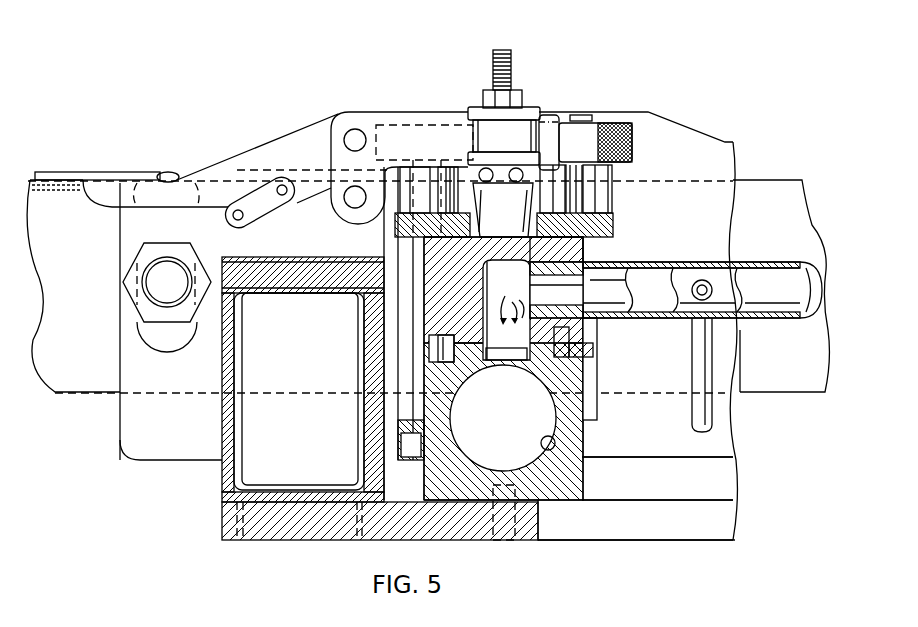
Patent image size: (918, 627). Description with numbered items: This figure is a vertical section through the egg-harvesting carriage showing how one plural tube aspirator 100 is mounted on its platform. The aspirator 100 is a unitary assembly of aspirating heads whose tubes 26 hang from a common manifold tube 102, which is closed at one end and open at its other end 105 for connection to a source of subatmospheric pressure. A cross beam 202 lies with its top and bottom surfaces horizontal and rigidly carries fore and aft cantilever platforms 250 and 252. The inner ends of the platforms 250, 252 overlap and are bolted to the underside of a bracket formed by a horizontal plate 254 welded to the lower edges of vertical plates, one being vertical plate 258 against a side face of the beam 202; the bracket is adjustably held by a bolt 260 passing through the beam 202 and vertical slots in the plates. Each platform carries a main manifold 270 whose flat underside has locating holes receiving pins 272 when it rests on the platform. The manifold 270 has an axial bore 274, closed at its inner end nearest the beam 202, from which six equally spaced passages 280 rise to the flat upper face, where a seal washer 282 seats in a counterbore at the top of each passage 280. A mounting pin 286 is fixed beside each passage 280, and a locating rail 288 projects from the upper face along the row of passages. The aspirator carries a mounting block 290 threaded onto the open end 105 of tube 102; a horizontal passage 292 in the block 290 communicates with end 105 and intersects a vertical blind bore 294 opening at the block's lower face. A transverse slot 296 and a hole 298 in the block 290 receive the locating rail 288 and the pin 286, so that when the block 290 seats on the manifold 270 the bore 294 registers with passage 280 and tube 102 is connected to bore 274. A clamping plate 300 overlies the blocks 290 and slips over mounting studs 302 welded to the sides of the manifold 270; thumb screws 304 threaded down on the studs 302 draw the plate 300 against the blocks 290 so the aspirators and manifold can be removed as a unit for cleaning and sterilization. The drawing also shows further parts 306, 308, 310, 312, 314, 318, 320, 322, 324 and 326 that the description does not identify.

The tube 26 is at (691, 361).
The plural tube aspirator 100 is at (793, 230).
The common manifold tube 102 is at (774, 361).
The open end of tube 105 is at (595, 265).
The cross beam 202 is at (756, 180).
The fore cantilever platform 250 is at (735, 525).
The aft cantilever platform 252 is at (260, 536).
The horizontal plate 254 is at (738, 482).
The vertical plate 258 is at (740, 432).
The bolt 260 is at (131, 296).
The main manifold 270 is at (583, 478).
The pins 272 is at (530, 543).
The axial bore 274 is at (553, 440).
The passages 280 is at (500, 366).
The seal washer 282 is at (510, 310).
The mounting pins 286 is at (439, 352).
The locating rail 288 is at (569, 357).
The mounting block 290 is at (608, 257).
The horizontal passage 292 is at (570, 258).
The vertical blind bore 294 is at (441, 273).
The transverse slot 296 is at (600, 343).
The hole 298 is at (439, 338).
The clamping plate 300 is at (613, 235).
The mounting studs 302 is at (413, 125).
The thumb screws 304 is at (633, 133).
The clamp arm 306 is at (292, 131).
The top plate 308 is at (287, 243).
The inner liner 310 is at (247, 421).
The side wall 312 is at (218, 433).
The plate 314 is at (68, 172).
The link 318 is at (313, 138).
The nut body 320 is at (553, 110).
The spindle 322 is at (537, 202).
The stud 324 is at (513, 62).
The wedge 326 is at (504, 210).